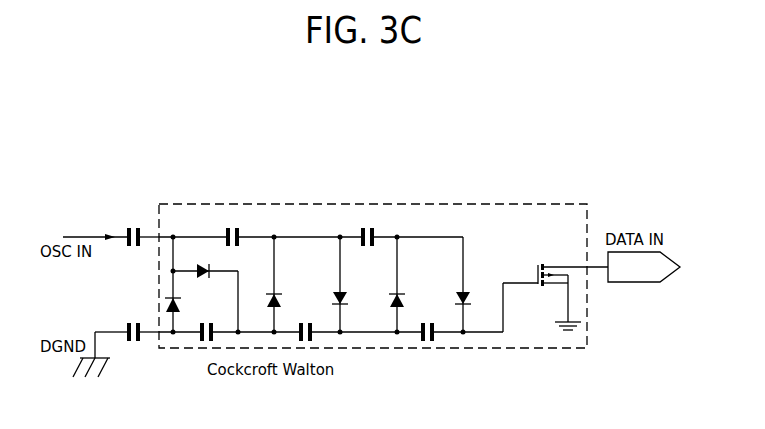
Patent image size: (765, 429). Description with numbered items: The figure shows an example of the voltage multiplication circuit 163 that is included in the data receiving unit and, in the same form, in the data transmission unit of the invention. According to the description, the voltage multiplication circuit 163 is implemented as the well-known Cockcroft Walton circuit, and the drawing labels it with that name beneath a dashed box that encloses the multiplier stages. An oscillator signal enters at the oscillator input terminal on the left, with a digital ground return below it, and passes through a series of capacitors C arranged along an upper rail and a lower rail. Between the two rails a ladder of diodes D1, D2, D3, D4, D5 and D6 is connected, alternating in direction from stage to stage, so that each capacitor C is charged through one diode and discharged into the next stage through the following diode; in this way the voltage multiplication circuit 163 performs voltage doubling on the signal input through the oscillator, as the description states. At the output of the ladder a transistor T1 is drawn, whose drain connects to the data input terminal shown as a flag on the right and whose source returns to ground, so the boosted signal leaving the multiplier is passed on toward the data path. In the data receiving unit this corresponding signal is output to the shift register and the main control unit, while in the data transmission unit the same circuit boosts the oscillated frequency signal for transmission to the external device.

The voltage multiplication circuit 163 is at (572, 204).
The capacitor C is at (280, 276).
The diode D1 is at (205, 288).
The diode D2 is at (184, 299).
The diode D3 is at (284, 295).
The diode D4 is at (352, 301).
The diode D5 is at (407, 294).
The diode D6 is at (475, 301).
The transistor T1 is at (568, 265).